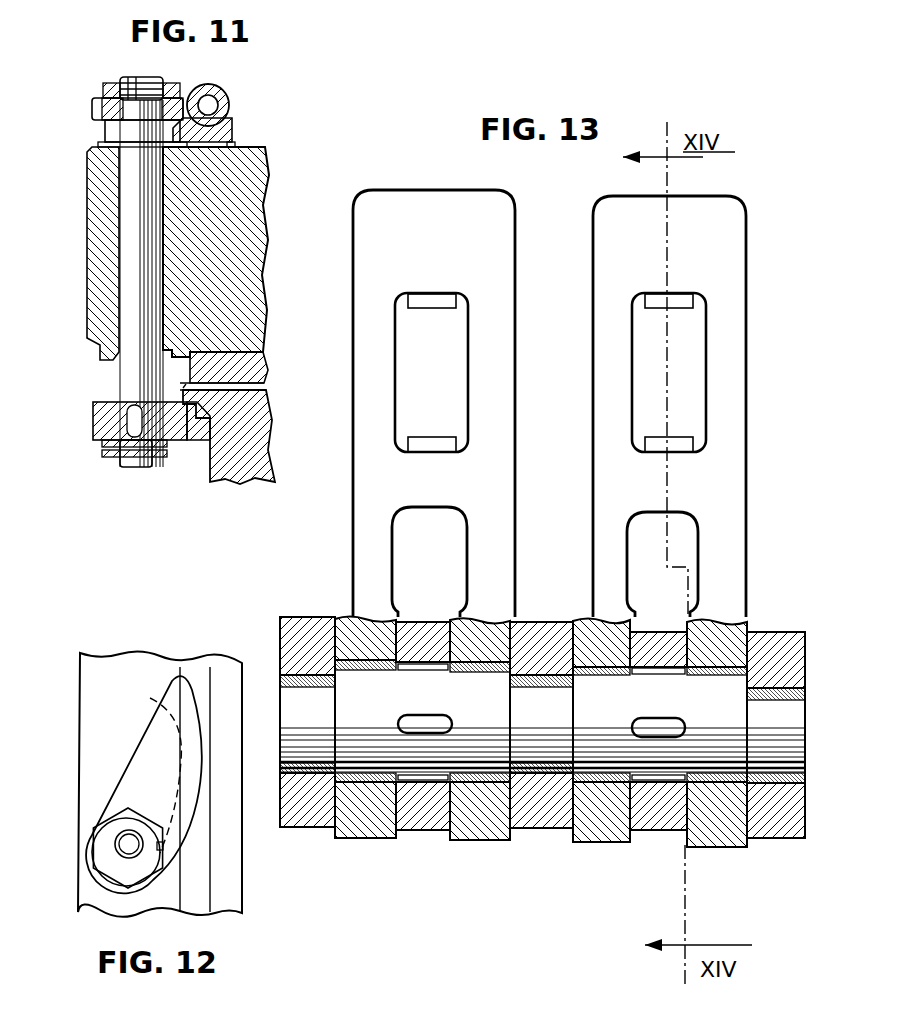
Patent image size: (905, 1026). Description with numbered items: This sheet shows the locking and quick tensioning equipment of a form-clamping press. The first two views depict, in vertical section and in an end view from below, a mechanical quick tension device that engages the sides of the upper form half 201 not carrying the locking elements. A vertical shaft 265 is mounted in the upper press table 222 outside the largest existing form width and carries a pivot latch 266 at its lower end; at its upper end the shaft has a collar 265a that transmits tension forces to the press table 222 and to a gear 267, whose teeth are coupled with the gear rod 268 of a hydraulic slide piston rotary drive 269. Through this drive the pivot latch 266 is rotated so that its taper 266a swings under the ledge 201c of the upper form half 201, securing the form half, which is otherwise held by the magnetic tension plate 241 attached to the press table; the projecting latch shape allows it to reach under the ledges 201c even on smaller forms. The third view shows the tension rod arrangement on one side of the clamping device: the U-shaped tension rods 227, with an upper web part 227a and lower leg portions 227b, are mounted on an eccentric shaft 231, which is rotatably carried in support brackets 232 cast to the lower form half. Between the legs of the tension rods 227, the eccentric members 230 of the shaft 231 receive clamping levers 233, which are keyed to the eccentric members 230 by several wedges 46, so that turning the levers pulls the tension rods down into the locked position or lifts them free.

In FIG. 13, the wedges 46 is at (418, 667).
In FIG. 11, the upper form half 201 is at (240, 463).
In FIG. 11, the ledge 201c is at (183, 388).
In FIG. 12, the ledge 201c is at (203, 683).
In FIG. 11, the upper press table 222 is at (247, 205).
In FIG. 12, the upper press table 222 is at (100, 690).
In FIG. 13, the tension rods 227 is at (370, 255).
In FIG. 13, the upper web part 227a is at (425, 207).
In FIG. 13, the lower opening of hanger plate 227b is at (402, 483).
In FIG. 13, the eccentric members 230 is at (372, 685).
In FIG. 13, the eccentric shafts 231 is at (298, 715).
In FIG. 13, the support brackets 232 is at (307, 813).
In FIG. 13, the clamping levers 233 is at (422, 810).
In FIG. 11, the magnetic tension plate 241 is at (253, 368).
In FIG. 11, the vertical shafts 265 is at (130, 207).
In FIG. 12, the vertical shafts 265 is at (132, 843).
In FIG. 11, the collar 265a is at (117, 130).
In FIG. 11, the pivot latch 266 is at (100, 419).
In FIG. 12, the pivot latch 266 is at (135, 785).
In FIG. 11, the taper 266a is at (203, 397).
In FIG. 12, the taper 266a is at (155, 710).
In FIG. 11, the gear 267 is at (109, 101).
In FIG. 11, the gear rod 268 is at (230, 105).
In FIG. 11, the hydraulic slide piston rotary drive 269 is at (223, 132).